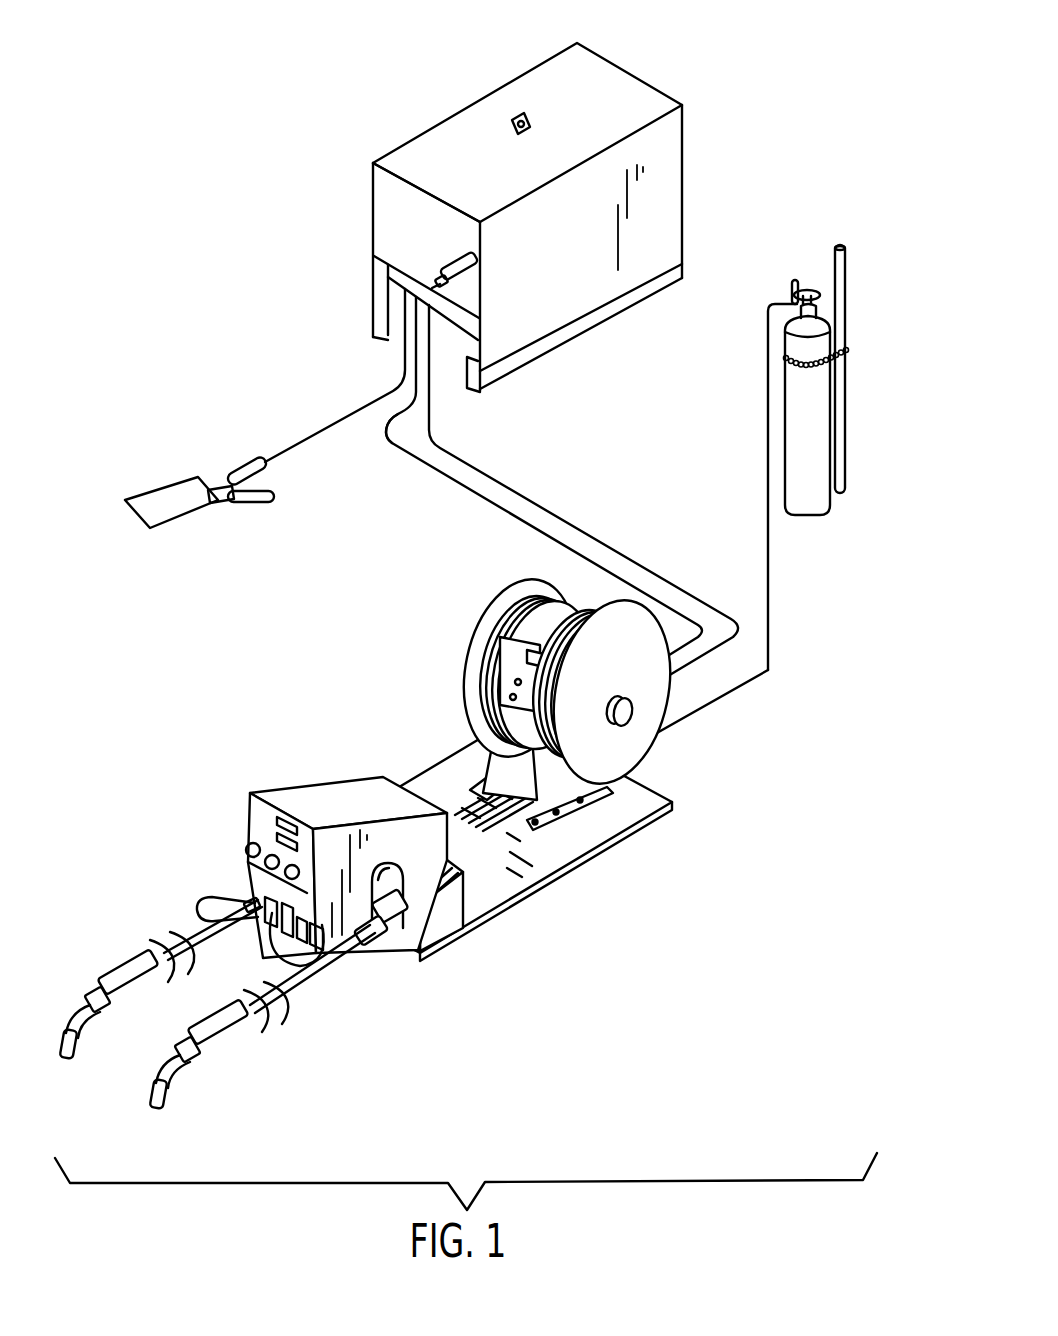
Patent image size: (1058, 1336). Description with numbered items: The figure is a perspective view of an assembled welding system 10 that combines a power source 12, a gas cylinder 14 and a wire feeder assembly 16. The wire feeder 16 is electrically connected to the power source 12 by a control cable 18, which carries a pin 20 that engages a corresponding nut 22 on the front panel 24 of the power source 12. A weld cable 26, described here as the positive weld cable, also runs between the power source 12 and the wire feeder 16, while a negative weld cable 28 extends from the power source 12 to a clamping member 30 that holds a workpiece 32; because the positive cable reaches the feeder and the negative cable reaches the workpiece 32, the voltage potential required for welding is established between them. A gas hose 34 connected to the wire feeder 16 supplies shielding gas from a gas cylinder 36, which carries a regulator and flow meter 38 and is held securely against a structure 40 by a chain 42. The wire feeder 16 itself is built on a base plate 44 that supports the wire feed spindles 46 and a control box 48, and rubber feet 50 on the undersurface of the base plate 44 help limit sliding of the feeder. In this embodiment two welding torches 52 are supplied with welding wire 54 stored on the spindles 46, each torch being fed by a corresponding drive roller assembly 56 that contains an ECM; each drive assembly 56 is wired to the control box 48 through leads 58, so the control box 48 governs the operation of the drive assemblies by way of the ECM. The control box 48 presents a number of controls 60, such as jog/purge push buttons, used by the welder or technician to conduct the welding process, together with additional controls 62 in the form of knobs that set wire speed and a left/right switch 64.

The welding system 10 is at (410, 50).
The power source 12 is at (640, 58).
The gas cylinder 14 is at (852, 238).
The wire feeder assembly 16 is at (707, 775).
The control cable 18 is at (433, 410).
The pin 20 is at (462, 278).
The nut 22 is at (476, 259).
The front panel 24 is at (397, 233).
The weld cable 26 is at (386, 410).
The negative weld cable 28 is at (330, 425).
The clamping member 30 is at (265, 500).
The workpiece 32 is at (137, 495).
The gas hose 34 is at (770, 673).
The gas cylinder 36 is at (783, 417).
The regulator and flow meter 38 is at (778, 273).
The structure 40 is at (843, 398).
The chain 42 is at (840, 353).
The base plate 44 is at (557, 850).
The wire feed spindles 46 is at (570, 650).
The control box 48 is at (312, 819).
The rubber feet 50 is at (668, 812).
The welding torches 52 is at (200, 1033).
The welding wire 54 is at (510, 603).
The drive roller assembly 56 is at (417, 962).
The leads 58 is at (287, 970).
The controls 60 is at (237, 907).
The controls 62 is at (240, 843).
The left/right switch 64 is at (260, 825).